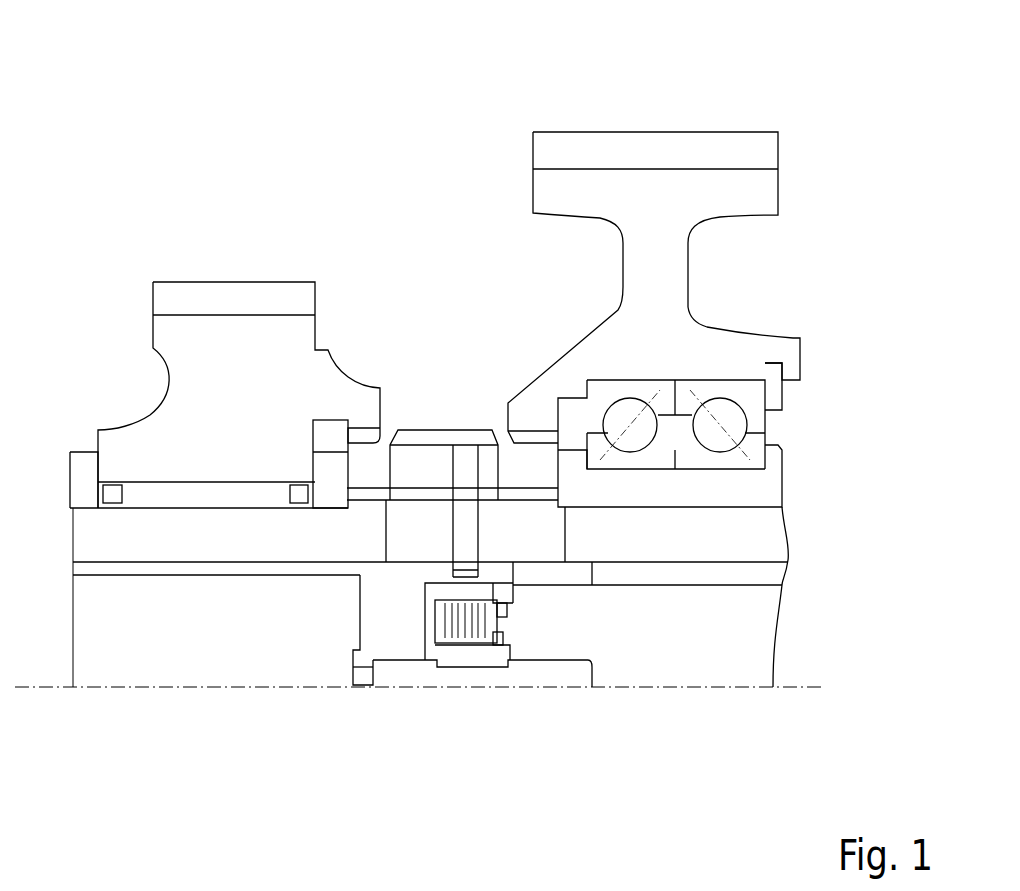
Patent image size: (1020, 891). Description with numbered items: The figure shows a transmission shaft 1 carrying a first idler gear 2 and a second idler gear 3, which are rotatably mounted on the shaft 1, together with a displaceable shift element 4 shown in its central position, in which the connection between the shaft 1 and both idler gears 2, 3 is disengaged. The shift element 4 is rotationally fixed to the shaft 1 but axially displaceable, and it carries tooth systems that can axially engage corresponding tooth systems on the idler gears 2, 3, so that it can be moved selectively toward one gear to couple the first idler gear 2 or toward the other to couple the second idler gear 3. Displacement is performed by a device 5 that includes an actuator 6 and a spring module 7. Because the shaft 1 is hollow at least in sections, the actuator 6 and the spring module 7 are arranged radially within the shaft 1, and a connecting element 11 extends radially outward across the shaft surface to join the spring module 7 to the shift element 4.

The shaft 1 is at (83, 537).
The first idler gear 2 is at (172, 410).
The second idler gear 3 is at (757, 207).
The shift element 4 is at (428, 463).
The device 5 is at (347, 702).
The actuator 6 is at (225, 672).
The spring module 7 is at (522, 625).
The connecting element 11 is at (463, 532).